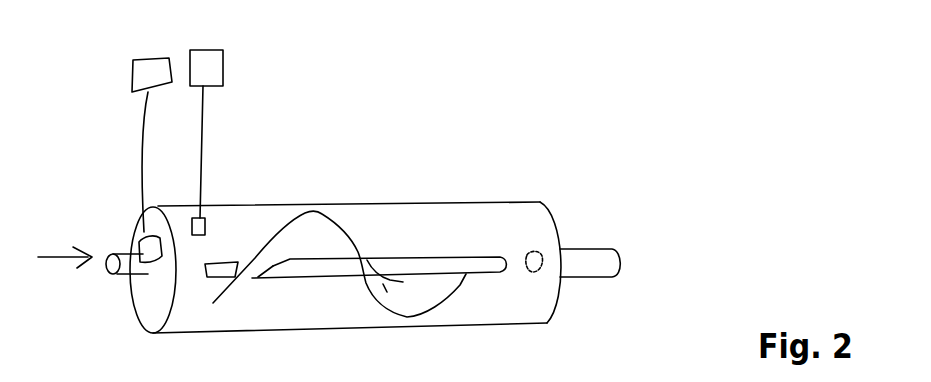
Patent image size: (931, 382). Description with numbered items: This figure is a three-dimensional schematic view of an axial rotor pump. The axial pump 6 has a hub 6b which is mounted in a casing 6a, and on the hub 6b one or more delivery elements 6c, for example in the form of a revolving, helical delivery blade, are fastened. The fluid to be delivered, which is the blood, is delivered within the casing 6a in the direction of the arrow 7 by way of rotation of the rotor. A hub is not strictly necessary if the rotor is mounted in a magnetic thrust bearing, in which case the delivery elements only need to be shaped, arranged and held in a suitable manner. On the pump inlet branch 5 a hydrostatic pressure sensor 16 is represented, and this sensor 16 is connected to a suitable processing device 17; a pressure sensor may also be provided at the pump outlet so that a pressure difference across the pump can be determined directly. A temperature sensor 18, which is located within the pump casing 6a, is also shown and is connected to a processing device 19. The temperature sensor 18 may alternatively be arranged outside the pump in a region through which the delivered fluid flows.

The pump inlet branch 5 is at (110, 277).
The axial pump 6 is at (345, 234).
The casing 6a is at (233, 204).
The hub 6b is at (297, 282).
The delivery element 6c is at (357, 233).
The arrow 7 is at (688, 283).
The hydrostatic pressure sensor 16 is at (138, 240).
The processing device 17 is at (148, 59).
The temperature sensor 18 is at (206, 226).
The processing device 19 is at (223, 61).